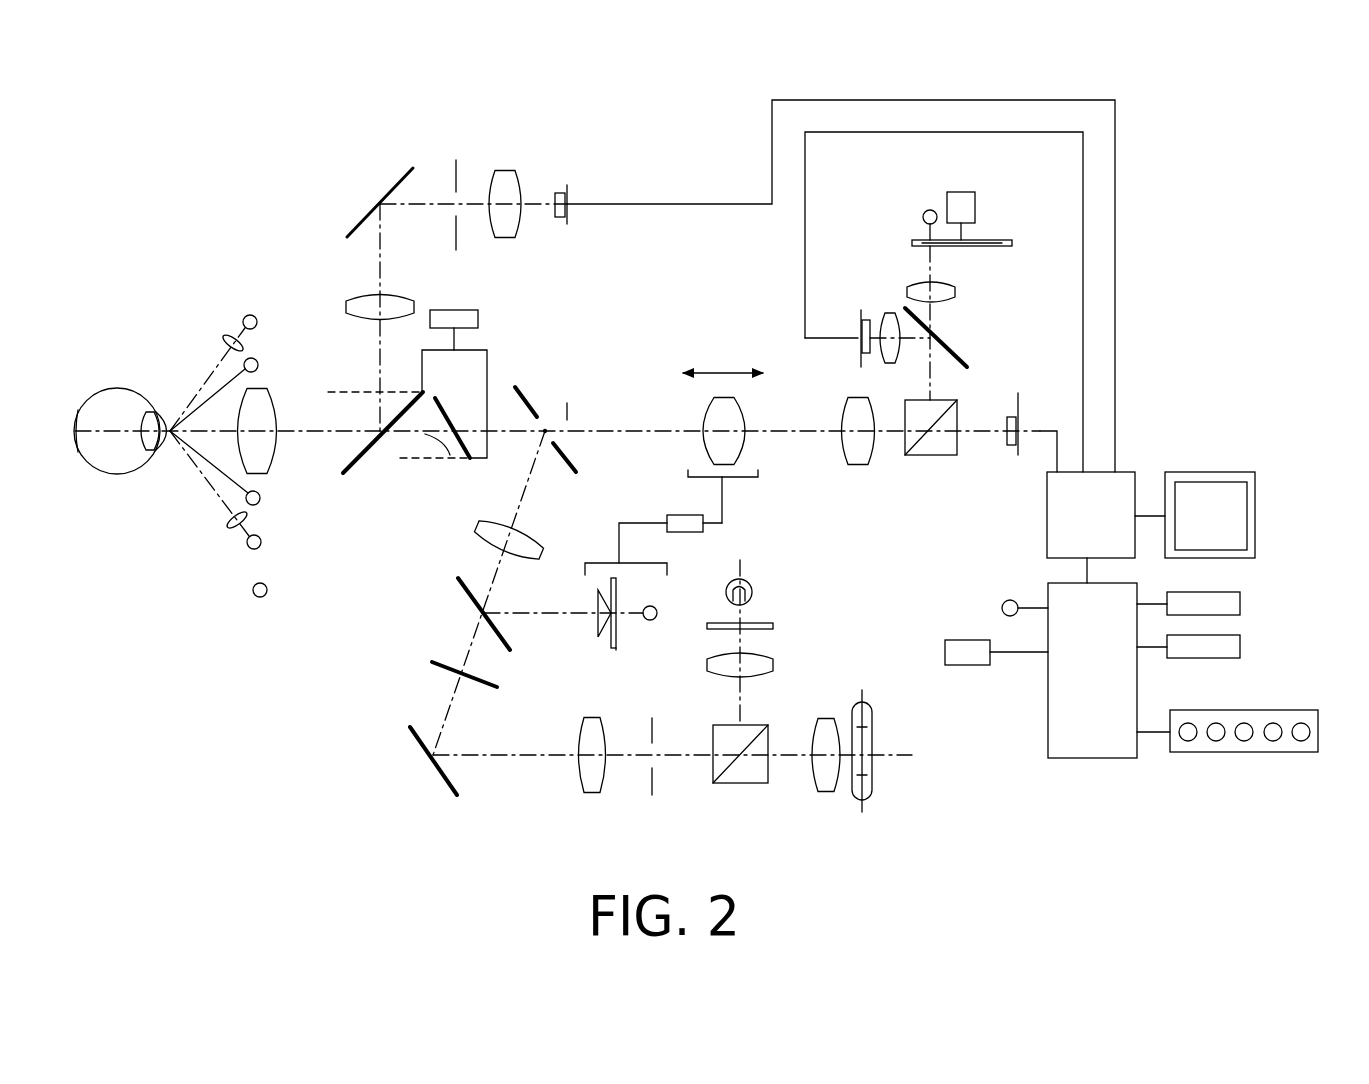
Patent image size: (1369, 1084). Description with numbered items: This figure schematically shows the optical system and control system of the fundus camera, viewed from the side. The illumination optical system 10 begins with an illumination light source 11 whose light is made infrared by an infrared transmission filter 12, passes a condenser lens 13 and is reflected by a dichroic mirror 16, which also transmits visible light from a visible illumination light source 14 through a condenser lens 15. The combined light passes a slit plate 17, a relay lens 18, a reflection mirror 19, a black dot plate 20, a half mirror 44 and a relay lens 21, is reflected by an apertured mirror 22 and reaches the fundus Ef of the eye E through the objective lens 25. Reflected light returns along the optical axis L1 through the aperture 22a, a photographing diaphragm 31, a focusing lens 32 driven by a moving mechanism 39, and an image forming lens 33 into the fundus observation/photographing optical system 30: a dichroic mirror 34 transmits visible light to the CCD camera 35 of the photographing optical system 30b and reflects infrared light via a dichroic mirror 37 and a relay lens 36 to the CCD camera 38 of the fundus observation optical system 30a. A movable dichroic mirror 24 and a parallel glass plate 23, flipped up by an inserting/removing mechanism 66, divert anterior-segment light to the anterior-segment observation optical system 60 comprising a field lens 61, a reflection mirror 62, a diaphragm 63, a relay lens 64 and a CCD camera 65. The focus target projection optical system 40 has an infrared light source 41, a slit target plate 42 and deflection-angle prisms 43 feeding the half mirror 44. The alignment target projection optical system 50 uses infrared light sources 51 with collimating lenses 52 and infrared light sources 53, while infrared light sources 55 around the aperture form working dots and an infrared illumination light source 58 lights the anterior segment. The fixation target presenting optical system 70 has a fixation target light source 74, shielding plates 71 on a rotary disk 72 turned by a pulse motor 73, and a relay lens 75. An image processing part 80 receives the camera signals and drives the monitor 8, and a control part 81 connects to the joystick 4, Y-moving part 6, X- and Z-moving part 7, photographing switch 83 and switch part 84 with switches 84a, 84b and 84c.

The joystick 4 is at (945, 652).
The Y-moving part 6 is at (1240, 603).
The X- and Z-moving part 7 is at (1240, 646).
The monitor 8 is at (1215, 472).
The illumination optical system 10 is at (370, 713).
The illumination light source 11 is at (752, 592).
The infrared transmission filter 12 is at (773, 626).
The condenser lens 13 is at (762, 663).
The visible illumination light source 14 is at (874, 764).
The condenser lens 15 is at (822, 770).
The dichroic mirror 16 is at (750, 772).
The slit plate 17 is at (650, 775).
The relay lens 18 is at (586, 772).
The reflection mirror 19 is at (422, 748).
The black dot plate 20 is at (440, 672).
The relay lens 21 is at (476, 538).
The apertured mirror 22 is at (533, 392).
The aperture 22a is at (560, 470).
The parallel glass plate 23 is at (411, 459).
The dichroic mirror 24 is at (348, 474).
The objective lens 25 is at (268, 412).
The fundus observation/photographing optical system 30 is at (649, 308).
The fundus observation optical system 30a is at (790, 325).
The photographing optical system 30b is at (925, 468).
The photographing diaphragm 31 is at (567, 403).
The focusing lens 32 is at (705, 400).
The image forming lens 33 is at (846, 405).
The dichroic mirror 34 is at (942, 457).
The CCD camera 35 is at (1020, 413).
The relay lens 36 is at (897, 362).
The dichroic mirror 37 is at (967, 367).
The CCD camera 38 is at (864, 320).
The moving mechanism 39 is at (676, 518).
The focus target projection optical system 40 is at (553, 628).
The infrared light source 41 is at (655, 619).
The slit target plate 42 is at (617, 625).
The deflection-angle prisms 43 is at (598, 602).
The half mirror 44 is at (462, 588).
The alignment target projection optical system 50 is at (186, 358).
The infrared light sources 51 is at (250, 315).
The collimating lenses 52 is at (228, 335).
The infrared light sources 53 is at (257, 362).
The infrared light sources 55 is at (545, 431).
The infrared illumination light source 58 is at (258, 597).
The anterior-segment observation optical system 60 is at (355, 190).
The field lens 61 is at (348, 307).
The reflection mirror 62 is at (396, 184).
The diaphragm 63 is at (457, 165).
The relay lens 64 is at (507, 172).
The CCD camera 65 is at (563, 186).
The inserting/removing mechanism 66 is at (460, 318).
The fixation target presenting optical system 70 is at (1137, 218).
The shielding plate 71 is at (923, 242).
The rotary disk 72 is at (1012, 243).
The pulse motor 73 is at (976, 200).
The fixation target light source 74 is at (929, 210).
The relay lens 75 is at (921, 286).
The image processing part 80 is at (1047, 537).
The control part 81 is at (1047, 714).
The photographing switch 83 is at (1002, 607).
The switch part 84 is at (1255, 710).
The switch 84a is at (1301, 742).
The switch 84b is at (1273, 742).
The switch 84c is at (1244, 742).
The eye E is at (112, 472).
The fundus Ef is at (85, 412).
The optical axis L1 is at (310, 433).